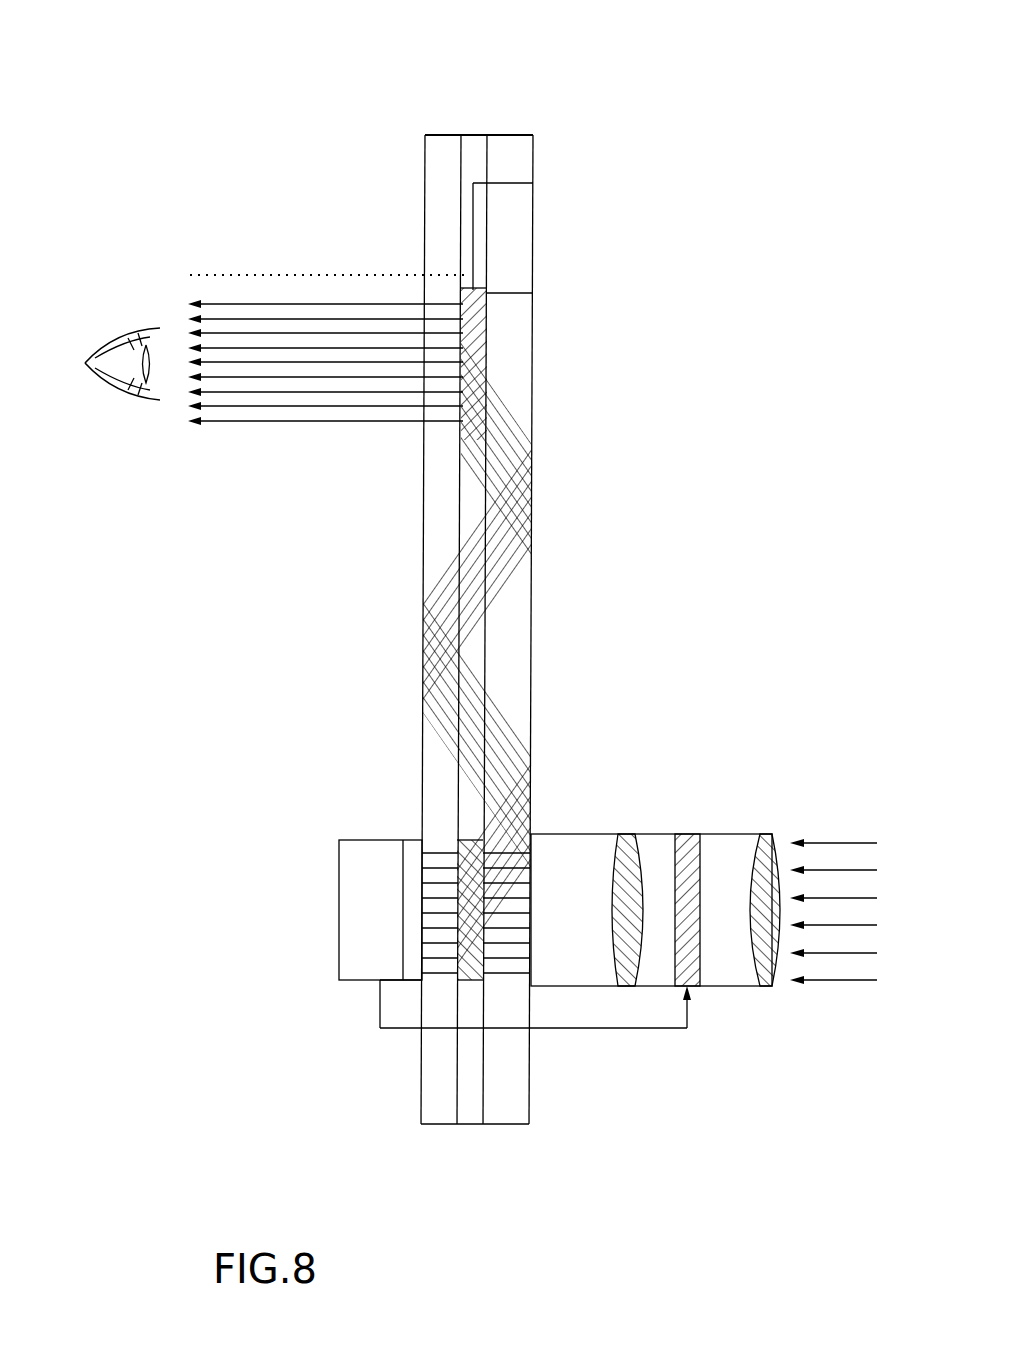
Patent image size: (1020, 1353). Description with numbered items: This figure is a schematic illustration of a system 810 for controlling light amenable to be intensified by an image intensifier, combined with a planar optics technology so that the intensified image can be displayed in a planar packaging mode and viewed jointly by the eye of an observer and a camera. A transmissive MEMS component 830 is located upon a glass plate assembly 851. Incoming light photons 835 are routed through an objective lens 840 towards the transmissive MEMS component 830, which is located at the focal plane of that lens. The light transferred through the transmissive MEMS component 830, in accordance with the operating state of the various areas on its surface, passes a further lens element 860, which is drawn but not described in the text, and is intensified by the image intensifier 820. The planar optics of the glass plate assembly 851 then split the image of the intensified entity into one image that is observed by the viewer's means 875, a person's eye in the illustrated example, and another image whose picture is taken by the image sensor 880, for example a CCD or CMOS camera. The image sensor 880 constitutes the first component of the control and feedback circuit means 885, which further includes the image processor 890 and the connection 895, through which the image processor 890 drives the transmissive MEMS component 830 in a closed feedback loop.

The system for controlling light 810 is at (742, 325).
The glass plate assembly 851 is at (477, 135).
The viewer's means 875 is at (94, 324).
The image intensifier 820 is at (598, 896).
The collimating lens 860 is at (628, 818).
The transmissive MEMS component 830 is at (698, 813).
The objective lens 840 is at (783, 818).
The light photons 835 is at (847, 987).
The image processor 890 is at (338, 915).
The image sensor 880 is at (410, 958).
The connection 895 is at (607, 1030).
The control and feedback circuit means 885 is at (585, 1120).